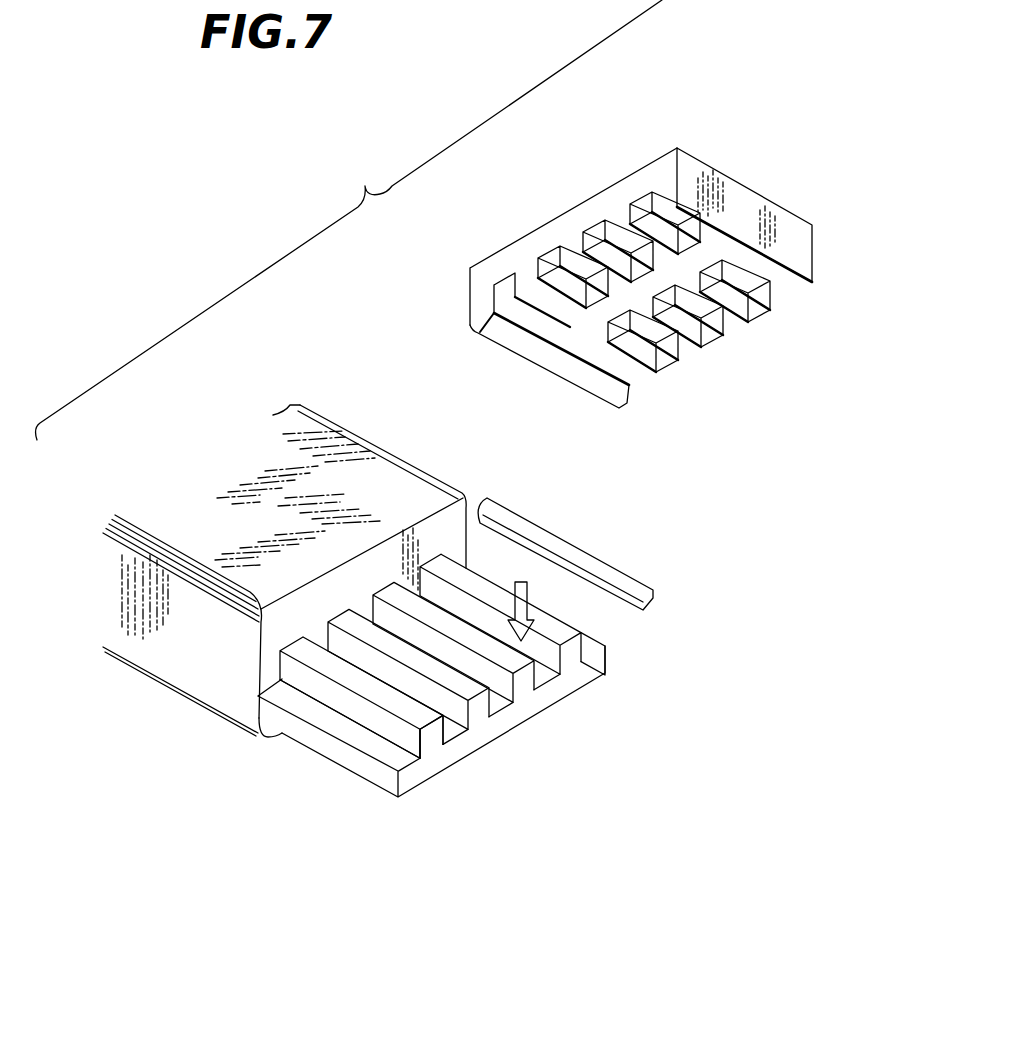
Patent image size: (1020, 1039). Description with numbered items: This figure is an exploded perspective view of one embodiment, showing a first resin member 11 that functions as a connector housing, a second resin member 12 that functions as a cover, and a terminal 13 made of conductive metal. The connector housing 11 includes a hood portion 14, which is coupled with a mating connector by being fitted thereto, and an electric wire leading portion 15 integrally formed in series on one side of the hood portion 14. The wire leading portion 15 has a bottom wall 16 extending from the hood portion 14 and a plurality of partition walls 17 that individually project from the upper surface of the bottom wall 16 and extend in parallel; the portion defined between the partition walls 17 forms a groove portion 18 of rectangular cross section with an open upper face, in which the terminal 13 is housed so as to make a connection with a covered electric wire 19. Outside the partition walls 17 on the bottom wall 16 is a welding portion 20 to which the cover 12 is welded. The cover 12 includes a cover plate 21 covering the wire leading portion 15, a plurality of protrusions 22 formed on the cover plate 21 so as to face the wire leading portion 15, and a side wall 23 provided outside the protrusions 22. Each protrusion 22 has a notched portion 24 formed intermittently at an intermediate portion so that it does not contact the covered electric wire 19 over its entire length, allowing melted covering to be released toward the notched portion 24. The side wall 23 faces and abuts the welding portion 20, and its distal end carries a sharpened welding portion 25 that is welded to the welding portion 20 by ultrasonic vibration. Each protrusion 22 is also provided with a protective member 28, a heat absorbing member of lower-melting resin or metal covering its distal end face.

The first resin member 11 is at (137, 674).
The second resin member 12 is at (639, 245).
The terminal 13 is at (596, 683).
The hood portion 14 is at (103, 647).
The electric wire leading portion 15 is at (480, 718).
The bottom wall 16 is at (453, 757).
The partition walls 17 is at (412, 712).
The groove portion 18 is at (592, 672).
The covered electric wire 19 is at (567, 553).
The welding portion 20 is at (605, 648).
The cover plate 21 is at (562, 227).
The protrusions 22 is at (662, 279).
The side wall 23 is at (673, 172).
The notched portion 24 is at (700, 250).
The sharpened welding portion 25 is at (690, 208).
The protective member 28 is at (581, 270).